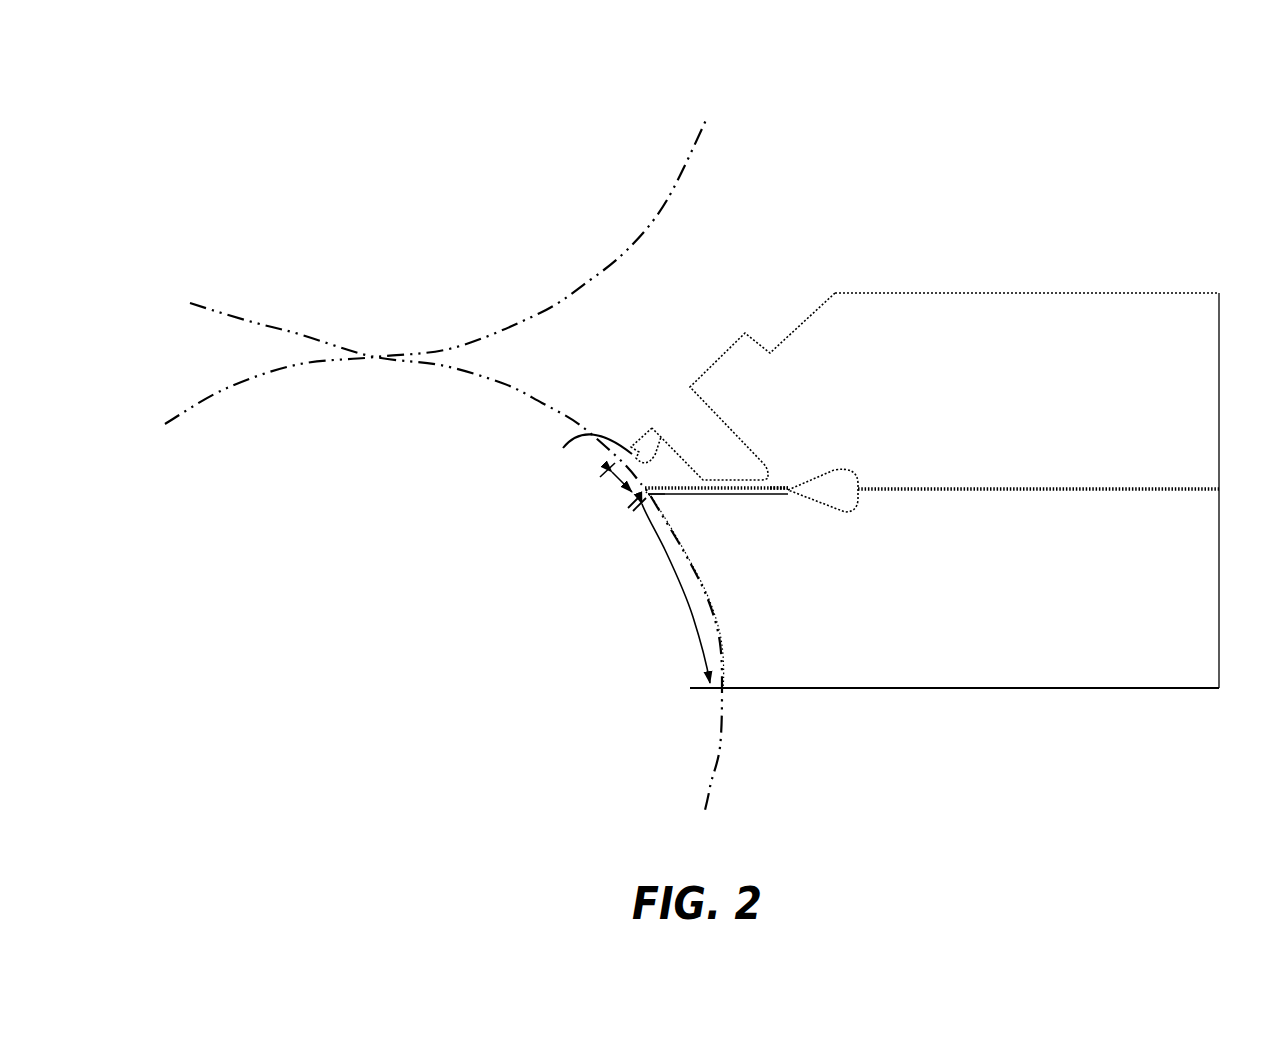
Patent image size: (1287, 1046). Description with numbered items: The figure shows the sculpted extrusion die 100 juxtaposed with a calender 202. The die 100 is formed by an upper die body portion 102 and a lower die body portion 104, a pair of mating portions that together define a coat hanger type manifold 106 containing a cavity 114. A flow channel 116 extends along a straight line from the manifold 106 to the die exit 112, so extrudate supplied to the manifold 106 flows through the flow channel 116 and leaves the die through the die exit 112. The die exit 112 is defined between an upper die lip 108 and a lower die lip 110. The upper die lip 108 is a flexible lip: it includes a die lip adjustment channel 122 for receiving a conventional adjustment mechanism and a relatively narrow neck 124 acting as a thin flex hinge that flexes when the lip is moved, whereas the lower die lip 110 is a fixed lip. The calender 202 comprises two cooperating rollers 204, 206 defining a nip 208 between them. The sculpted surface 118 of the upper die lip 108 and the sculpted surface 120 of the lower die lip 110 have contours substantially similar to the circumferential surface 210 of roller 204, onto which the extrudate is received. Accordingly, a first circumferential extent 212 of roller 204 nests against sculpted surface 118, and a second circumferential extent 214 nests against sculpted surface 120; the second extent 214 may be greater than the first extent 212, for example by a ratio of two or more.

The sculpted extrusion die 100 is at (1041, 254).
The upper die body portion 102 is at (1040, 392).
The lower die body portion 104 is at (1054, 586).
The manifold 106 is at (830, 470).
The upper die lip 108 is at (649, 481).
The lower die lip 110 is at (673, 510).
The die exit 112 is at (664, 497).
The cavity 114 is at (841, 490).
The flow channel 116 is at (777, 483).
The sculpted surface 118 is at (584, 454).
The sculpted surface 120 is at (708, 597).
The die lip adjustment channel 122 is at (631, 435).
The narrow neck 124 is at (743, 478).
The calender 202 is at (224, 216).
The roller 204 is at (406, 571).
The roller 206 is at (482, 238).
The nip 208 is at (367, 352).
The circumferential surface 210 is at (522, 393).
The first circumferential extent 212 is at (612, 493).
The second circumferential extent 214 is at (672, 582).